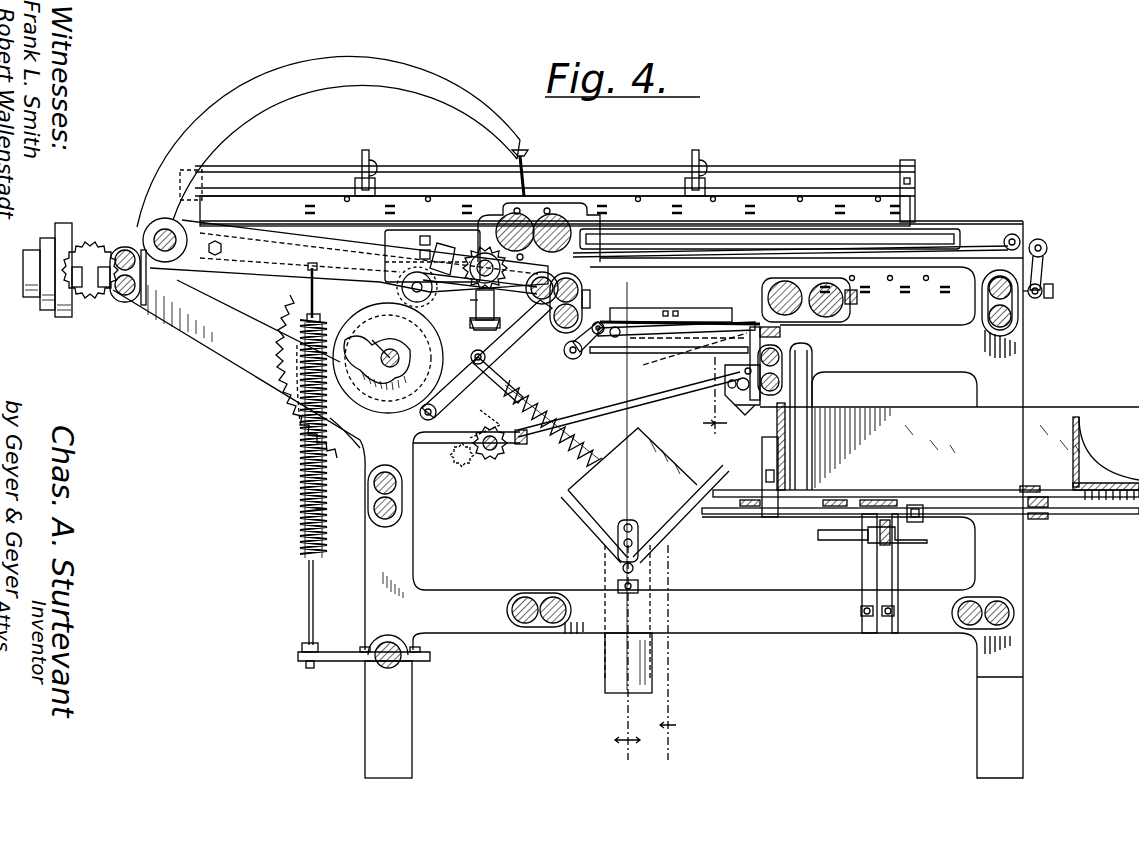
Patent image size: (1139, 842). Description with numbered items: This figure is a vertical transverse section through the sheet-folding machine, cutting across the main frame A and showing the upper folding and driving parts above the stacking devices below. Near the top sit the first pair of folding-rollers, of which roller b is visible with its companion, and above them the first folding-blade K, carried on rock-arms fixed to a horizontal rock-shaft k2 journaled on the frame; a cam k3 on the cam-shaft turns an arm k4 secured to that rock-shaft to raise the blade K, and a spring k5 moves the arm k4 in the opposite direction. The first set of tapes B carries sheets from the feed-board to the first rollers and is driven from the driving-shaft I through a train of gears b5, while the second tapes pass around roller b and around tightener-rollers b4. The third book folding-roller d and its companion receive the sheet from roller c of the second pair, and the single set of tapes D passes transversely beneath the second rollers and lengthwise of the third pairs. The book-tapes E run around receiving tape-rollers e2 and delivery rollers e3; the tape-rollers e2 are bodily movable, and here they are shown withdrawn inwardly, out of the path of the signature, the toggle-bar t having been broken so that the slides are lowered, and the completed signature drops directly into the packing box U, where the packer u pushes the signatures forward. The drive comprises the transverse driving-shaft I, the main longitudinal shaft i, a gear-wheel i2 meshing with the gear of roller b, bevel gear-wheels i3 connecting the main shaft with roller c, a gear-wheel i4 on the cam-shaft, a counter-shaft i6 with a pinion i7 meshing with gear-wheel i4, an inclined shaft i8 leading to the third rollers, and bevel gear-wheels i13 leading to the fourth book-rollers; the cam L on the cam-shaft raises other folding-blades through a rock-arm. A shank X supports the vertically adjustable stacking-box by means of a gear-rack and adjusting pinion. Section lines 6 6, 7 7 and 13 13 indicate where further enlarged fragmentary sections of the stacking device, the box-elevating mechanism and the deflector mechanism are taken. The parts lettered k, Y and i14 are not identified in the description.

The roller k is at (533, 283).
The rock-shaft k2 is at (150, 232).
The cam k3 is at (603, 286).
The arm k4 is at (349, 263).
The spring k5 is at (302, 530).
The first folding-blade K is at (528, 170).
The rail bracket Y is at (368, 158).
The first folding-roller b is at (539, 230).
The tightener-rollers b4 is at (1032, 242).
The train of gears b5 is at (100, 292).
The tapes B is at (760, 212).
The second folding-roller c is at (779, 239).
The third book folding-roller d is at (784, 284).
The tapes D is at (905, 296).
The tape-rollers e2 is at (790, 340).
The delivery rollers e3 is at (598, 325).
The book-tapes E is at (640, 310).
The section line 6 6 is at (662, 770).
The section line 7 7 is at (622, 757).
The section line 13 13 is at (715, 300).
The main longitudinal shaft i is at (478, 258).
The gear-wheel i2 is at (570, 452).
The bevel gear-wheels i3 is at (485, 359).
The gear-wheel i4 is at (299, 404).
The counter-shaft i6 is at (492, 462).
The pinion i7 is at (462, 468).
The inclined shaft i8 is at (600, 392).
The bevel gear-wheels i13 is at (472, 328).
The shaft i14 is at (476, 300).
The driving-shaft I is at (228, 281).
The cam L is at (388, 358).
The toggle-bar t is at (735, 367).
The packer u is at (783, 423).
The receiving box U is at (944, 392).
The shank X is at (612, 680).
The main frame A is at (970, 748).